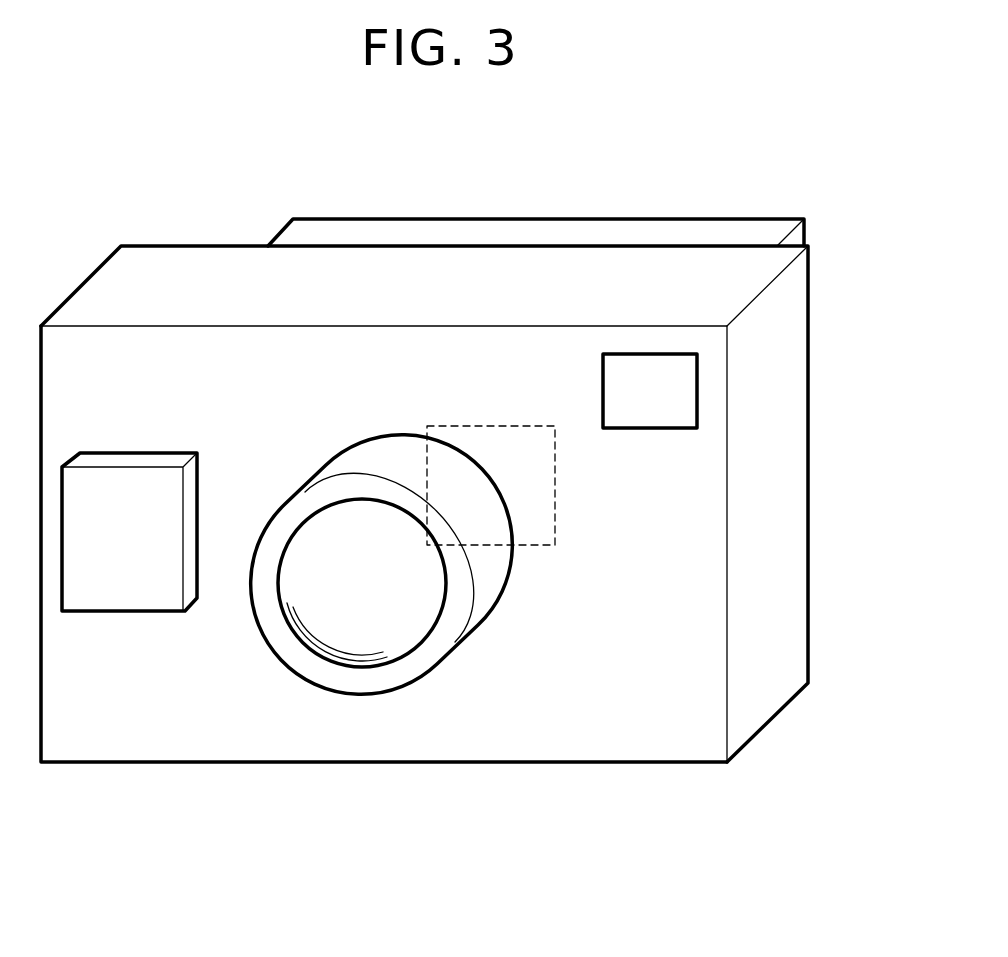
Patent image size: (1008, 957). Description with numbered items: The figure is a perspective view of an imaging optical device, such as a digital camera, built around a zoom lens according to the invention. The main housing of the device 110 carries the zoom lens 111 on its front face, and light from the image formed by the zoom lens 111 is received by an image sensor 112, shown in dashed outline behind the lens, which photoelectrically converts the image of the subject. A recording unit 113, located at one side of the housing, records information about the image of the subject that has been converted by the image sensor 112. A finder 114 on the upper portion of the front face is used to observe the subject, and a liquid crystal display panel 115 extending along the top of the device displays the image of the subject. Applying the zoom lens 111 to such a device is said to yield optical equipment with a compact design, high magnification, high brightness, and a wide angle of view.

The camera body 110 is at (653, 748).
The zoom lens 111 is at (361, 655).
The image sensor 112 is at (536, 541).
The recording unit 113 is at (123, 606).
The finder 114 is at (690, 399).
The liquid crystal display panel 115 is at (540, 226).